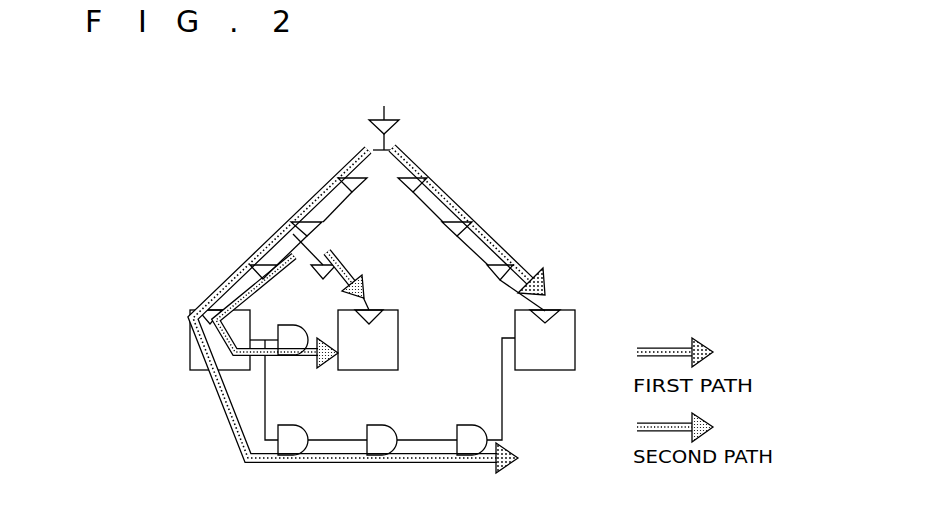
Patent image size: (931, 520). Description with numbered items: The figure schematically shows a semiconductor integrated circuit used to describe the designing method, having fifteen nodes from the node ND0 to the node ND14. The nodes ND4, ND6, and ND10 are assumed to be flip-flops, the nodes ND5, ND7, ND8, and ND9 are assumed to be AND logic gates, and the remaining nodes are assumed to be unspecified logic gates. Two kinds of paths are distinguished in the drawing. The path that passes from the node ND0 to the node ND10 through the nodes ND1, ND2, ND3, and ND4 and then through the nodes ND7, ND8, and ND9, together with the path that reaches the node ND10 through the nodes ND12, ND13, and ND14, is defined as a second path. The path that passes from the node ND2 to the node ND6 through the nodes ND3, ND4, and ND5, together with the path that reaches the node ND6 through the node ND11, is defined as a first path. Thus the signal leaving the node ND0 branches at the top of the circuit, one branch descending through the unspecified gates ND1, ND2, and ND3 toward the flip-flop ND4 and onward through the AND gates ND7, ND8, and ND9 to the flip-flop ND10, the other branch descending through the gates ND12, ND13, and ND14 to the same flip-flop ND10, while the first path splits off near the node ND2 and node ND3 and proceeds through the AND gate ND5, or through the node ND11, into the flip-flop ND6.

The node ND0 is at (389, 121).
The node ND1 is at (343, 170).
The node ND2 is at (297, 215).
The node ND3 is at (252, 256).
The node ND4 is at (192, 360).
The node ND5 is at (289, 336).
The node ND6 is at (384, 340).
The node ND7 is at (285, 429).
The node ND8 is at (378, 430).
The node ND9 is at (470, 430).
The node ND10 is at (569, 333).
The node ND11 is at (332, 265).
The node ND12 is at (423, 177).
The node ND13 is at (468, 218).
The node ND14 is at (510, 264).